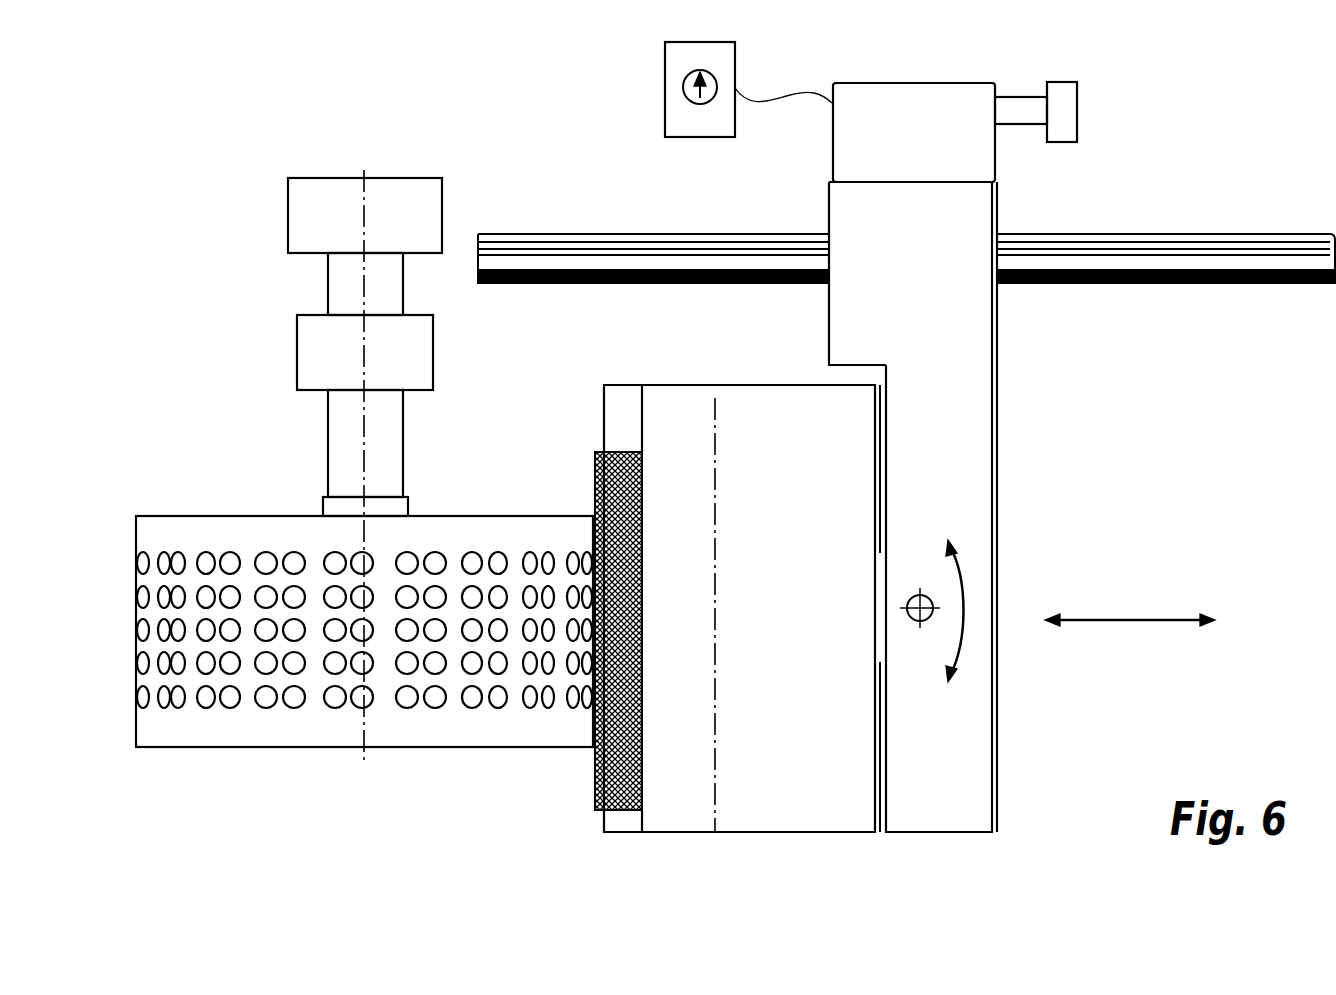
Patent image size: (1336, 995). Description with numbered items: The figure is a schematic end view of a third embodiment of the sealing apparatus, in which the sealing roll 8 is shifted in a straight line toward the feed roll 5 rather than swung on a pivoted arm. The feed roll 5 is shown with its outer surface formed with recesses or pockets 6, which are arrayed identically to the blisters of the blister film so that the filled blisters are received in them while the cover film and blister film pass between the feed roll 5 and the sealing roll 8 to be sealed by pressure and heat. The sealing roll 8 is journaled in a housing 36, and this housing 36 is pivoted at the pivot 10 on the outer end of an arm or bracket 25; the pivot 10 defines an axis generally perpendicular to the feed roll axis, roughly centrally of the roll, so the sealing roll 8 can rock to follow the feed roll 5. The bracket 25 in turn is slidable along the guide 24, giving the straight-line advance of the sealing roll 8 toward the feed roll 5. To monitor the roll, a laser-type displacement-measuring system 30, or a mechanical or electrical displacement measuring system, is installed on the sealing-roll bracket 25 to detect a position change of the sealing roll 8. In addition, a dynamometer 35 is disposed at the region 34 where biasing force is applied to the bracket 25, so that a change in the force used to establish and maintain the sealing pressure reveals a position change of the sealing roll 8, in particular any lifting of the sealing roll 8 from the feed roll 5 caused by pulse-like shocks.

The feed roll 5 is at (208, 520).
The recesses or pockets 6 is at (253, 700).
The sealing roll 8 is at (594, 787).
The pivot 10 is at (928, 618).
The guide 24 is at (1302, 264).
The arm or bracket 25 is at (955, 440).
The laser-type displacement-measuring system 30 is at (665, 78).
The region of application of force 34 is at (1028, 108).
The dynamometer 35 is at (1080, 105).
The housing 36 is at (810, 817).